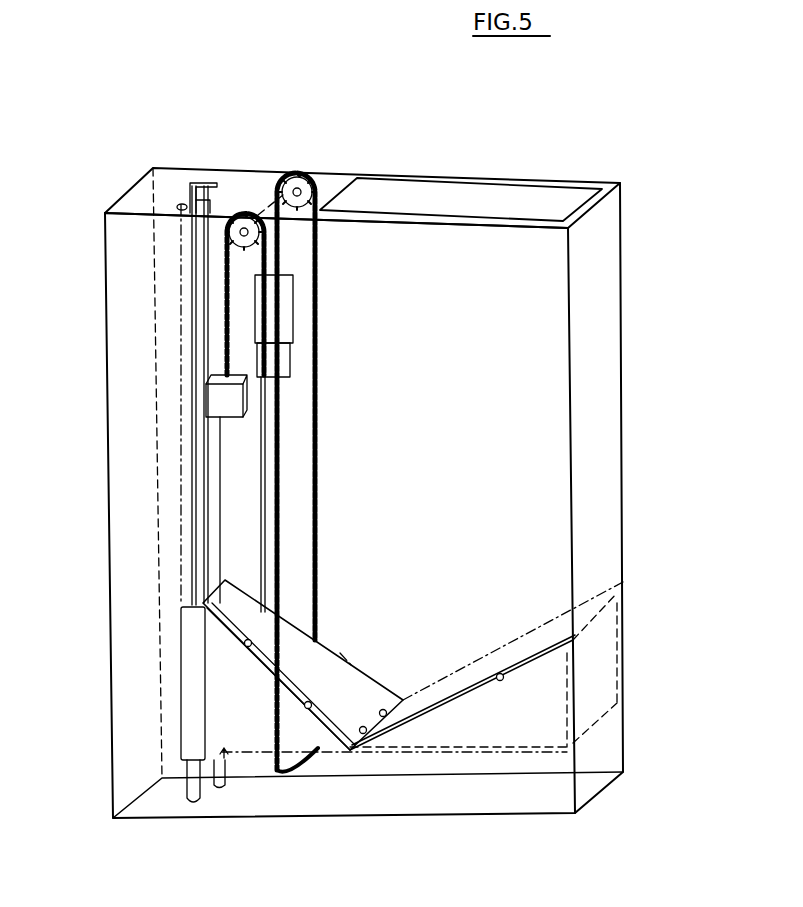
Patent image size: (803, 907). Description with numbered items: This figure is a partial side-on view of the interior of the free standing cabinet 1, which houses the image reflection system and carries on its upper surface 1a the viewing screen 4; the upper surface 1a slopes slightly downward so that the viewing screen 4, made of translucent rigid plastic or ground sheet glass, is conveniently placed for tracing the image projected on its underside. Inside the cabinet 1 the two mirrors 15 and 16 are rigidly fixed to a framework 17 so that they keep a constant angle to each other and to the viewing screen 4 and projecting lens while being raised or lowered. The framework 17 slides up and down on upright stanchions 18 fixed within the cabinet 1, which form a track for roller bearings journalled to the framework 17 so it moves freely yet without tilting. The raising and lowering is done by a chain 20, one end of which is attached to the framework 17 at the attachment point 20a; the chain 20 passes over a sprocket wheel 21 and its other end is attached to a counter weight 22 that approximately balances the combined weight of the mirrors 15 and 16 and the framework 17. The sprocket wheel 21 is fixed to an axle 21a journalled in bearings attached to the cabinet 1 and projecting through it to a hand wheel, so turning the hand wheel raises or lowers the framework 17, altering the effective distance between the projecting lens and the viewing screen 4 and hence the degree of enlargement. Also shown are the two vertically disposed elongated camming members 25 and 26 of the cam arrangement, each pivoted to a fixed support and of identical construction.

The cabinet 1 is at (642, 467).
The upper surface 1a is at (330, 200).
The viewing screen 4 is at (438, 197).
The mirror 15 is at (335, 688).
The mirror 16 is at (623, 582).
The framework 17 is at (369, 734).
The upright stanchions 18 is at (215, 325).
The chain 20 is at (265, 498).
The chain attachment point 20a is at (303, 760).
The sprocket wheel 21 is at (244, 212).
The axle 21a is at (288, 172).
The counter weight 22 is at (217, 400).
The camming member 25 is at (197, 557).
The camming member 26 is at (203, 517).